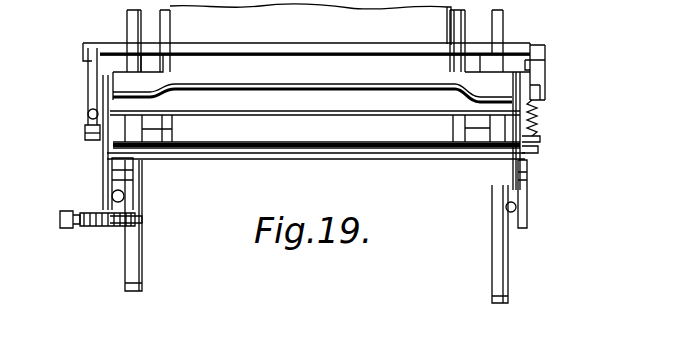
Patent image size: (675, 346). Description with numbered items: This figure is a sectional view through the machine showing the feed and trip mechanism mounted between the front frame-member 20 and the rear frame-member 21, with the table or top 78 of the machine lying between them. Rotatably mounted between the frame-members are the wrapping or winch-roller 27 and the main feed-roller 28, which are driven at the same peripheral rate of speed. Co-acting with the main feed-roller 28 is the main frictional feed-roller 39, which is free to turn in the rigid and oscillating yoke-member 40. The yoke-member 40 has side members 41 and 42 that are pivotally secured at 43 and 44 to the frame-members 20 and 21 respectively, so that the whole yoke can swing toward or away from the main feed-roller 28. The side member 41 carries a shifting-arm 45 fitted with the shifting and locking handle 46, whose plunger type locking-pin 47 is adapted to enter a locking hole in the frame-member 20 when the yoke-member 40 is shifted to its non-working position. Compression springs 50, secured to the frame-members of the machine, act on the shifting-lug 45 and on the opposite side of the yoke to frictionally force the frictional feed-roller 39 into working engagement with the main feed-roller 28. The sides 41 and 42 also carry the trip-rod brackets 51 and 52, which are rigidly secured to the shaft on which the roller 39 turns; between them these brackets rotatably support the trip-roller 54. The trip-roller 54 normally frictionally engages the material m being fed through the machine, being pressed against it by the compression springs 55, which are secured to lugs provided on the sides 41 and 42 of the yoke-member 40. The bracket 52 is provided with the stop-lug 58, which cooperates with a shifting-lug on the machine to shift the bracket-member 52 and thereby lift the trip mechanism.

The front frame-member 20 is at (126, 22).
The rear frame-member 21 is at (505, 21).
The wrapping or winch-roller 27 is at (445, 32).
The main feed-roller 28 is at (167, 137).
The main co-acting frictional feed-roller 39 is at (337, 76).
The yoke-member 40 is at (257, 98).
The side member of the yoke-member 41 is at (101, 152).
The side member of the yoke-member 42 is at (537, 150).
The pivot of side member 43 is at (104, 169).
The pivot of side member 44 is at (529, 177).
The shifting-arm 45 is at (97, 198).
The shifting and locking handle 46 is at (92, 228).
The locking-pin 47 is at (118, 229).
The compression springs 50 is at (124, 196).
The trip-rod bracket 51 is at (84, 62).
The trip-rod bracket 52 is at (541, 65).
The trip-roller 54 is at (316, 55).
The compression springs 55 is at (541, 136).
The stop-lug 58 is at (538, 121).
The table or top 78 is at (472, 153).
The material m is at (368, 131).